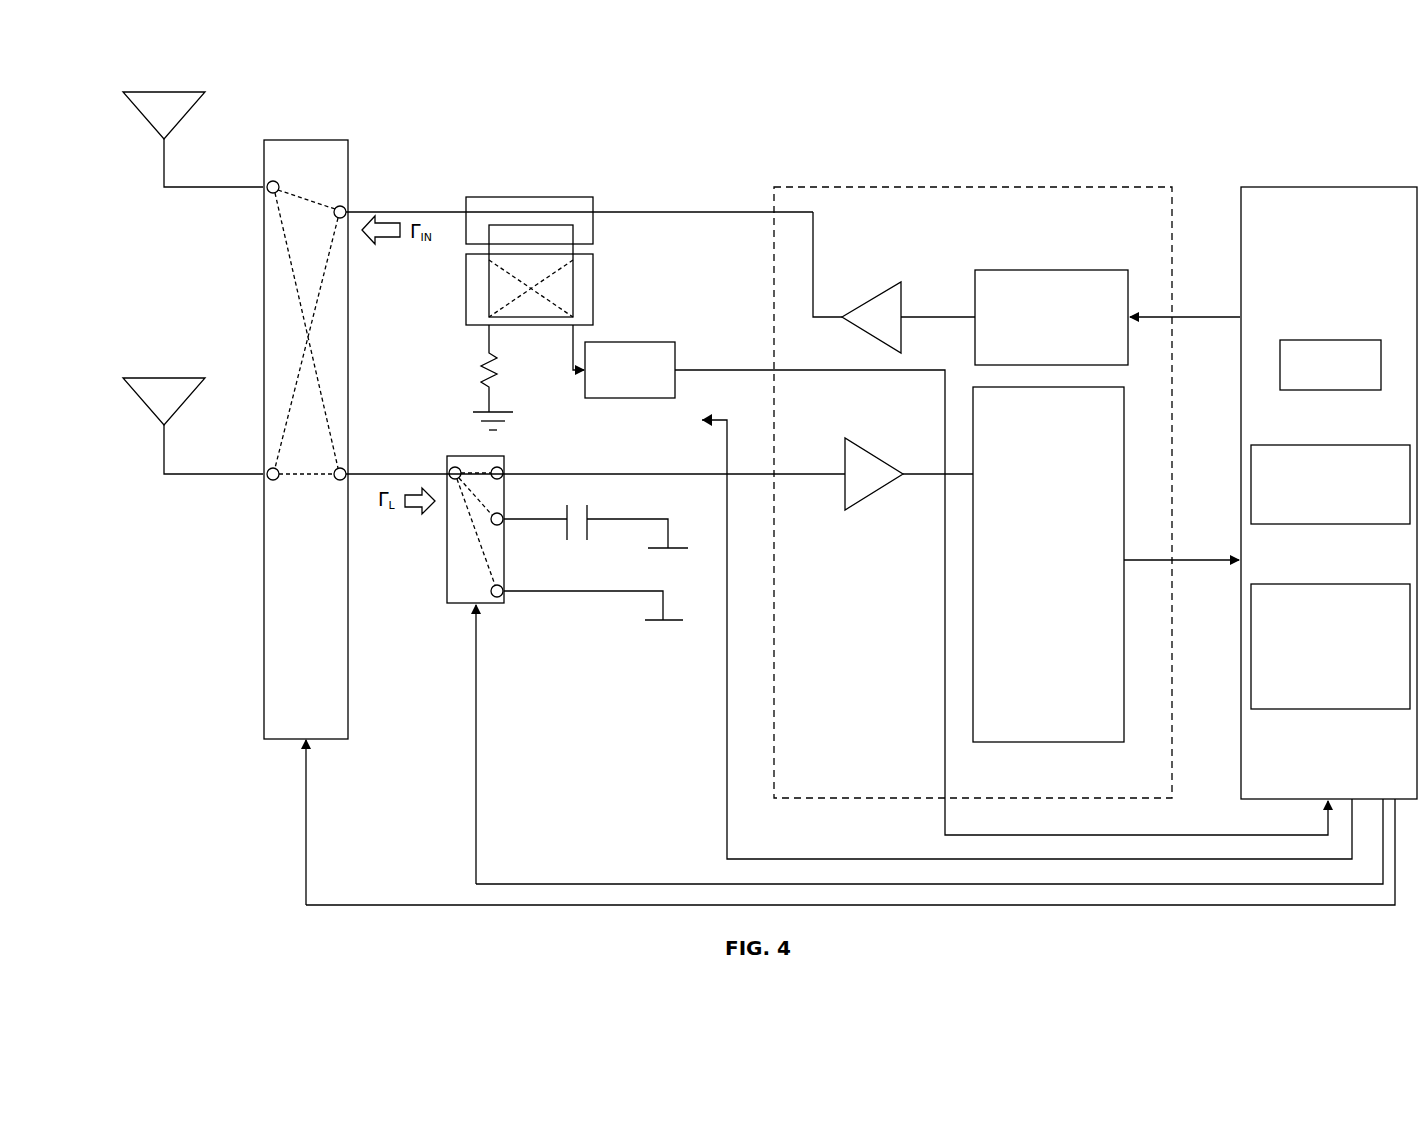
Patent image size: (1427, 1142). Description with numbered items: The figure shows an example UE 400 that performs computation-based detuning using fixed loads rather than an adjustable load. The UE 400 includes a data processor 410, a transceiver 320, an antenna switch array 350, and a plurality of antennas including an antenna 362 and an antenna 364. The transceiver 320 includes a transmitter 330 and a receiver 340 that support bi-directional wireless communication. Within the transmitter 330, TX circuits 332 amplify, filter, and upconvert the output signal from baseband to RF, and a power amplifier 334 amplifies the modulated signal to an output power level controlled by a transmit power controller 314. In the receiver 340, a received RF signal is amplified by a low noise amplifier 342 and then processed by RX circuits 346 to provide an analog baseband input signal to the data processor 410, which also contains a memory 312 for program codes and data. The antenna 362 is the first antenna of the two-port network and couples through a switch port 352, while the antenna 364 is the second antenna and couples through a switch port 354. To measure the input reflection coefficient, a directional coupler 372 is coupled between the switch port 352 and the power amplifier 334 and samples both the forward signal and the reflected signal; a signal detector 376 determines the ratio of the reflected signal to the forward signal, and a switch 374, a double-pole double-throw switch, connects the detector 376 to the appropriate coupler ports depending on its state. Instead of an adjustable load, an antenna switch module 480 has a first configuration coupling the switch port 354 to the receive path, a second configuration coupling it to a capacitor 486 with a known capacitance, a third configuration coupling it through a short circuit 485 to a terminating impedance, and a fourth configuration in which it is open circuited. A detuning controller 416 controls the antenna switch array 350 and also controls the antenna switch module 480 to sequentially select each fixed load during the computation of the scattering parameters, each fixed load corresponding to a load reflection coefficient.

The antenna 362 is at (145, 122).
The antenna 364 is at (145, 408).
The antenna switch array 350 is at (324, 493).
The switch port 352 is at (346, 206).
The switch port 354 is at (346, 468).
The directional coupler 372 is at (594, 218).
The switch 374 is at (594, 285).
The signal detector 376 is at (607, 398).
The antenna switch module 480 is at (500, 597).
The short circuit 485 is at (555, 592).
The capacitor 486 is at (590, 530).
The transceiver 320 is at (983, 187).
The transmitter 330 is at (878, 224).
The TX circuits 332 is at (1048, 270).
The power amplifier 334 is at (862, 306).
The receiver 340 is at (848, 552).
The low noise amplifier 342 is at (862, 442).
The RX circuits 346 is at (1050, 742).
The UE 400 is at (1326, 96).
The data processor 410 is at (1275, 187).
The memory 312 is at (1333, 340).
The transmit power controller 314 is at (1334, 445).
The detuning controller 416 is at (1325, 584).